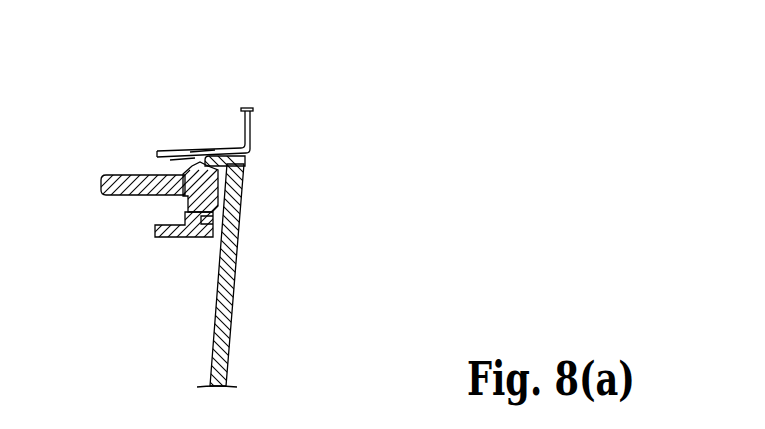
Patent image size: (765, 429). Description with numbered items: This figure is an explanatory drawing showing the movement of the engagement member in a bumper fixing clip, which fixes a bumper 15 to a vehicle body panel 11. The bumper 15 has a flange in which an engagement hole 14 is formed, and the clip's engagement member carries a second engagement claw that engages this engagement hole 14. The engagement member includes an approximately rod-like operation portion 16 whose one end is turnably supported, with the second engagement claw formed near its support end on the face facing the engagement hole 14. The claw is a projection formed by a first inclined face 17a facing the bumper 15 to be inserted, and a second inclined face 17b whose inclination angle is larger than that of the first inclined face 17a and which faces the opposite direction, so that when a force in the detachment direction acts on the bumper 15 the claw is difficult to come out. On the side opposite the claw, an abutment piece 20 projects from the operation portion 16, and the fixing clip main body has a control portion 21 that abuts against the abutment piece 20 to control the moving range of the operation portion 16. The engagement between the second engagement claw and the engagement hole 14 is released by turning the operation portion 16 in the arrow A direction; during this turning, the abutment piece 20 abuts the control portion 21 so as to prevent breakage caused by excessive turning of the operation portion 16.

The vehicle body panel 11 is at (252, 121).
The engagement hole 14 is at (199, 155).
The bumper 15 is at (230, 327).
The operation portion 16 is at (102, 182).
The first inclined face 17a is at (246, 159).
The second inclined face 17b is at (180, 160).
The abutment piece 20 is at (244, 208).
The control portion 21 is at (192, 208).
The arrow A direction A is at (114, 172).